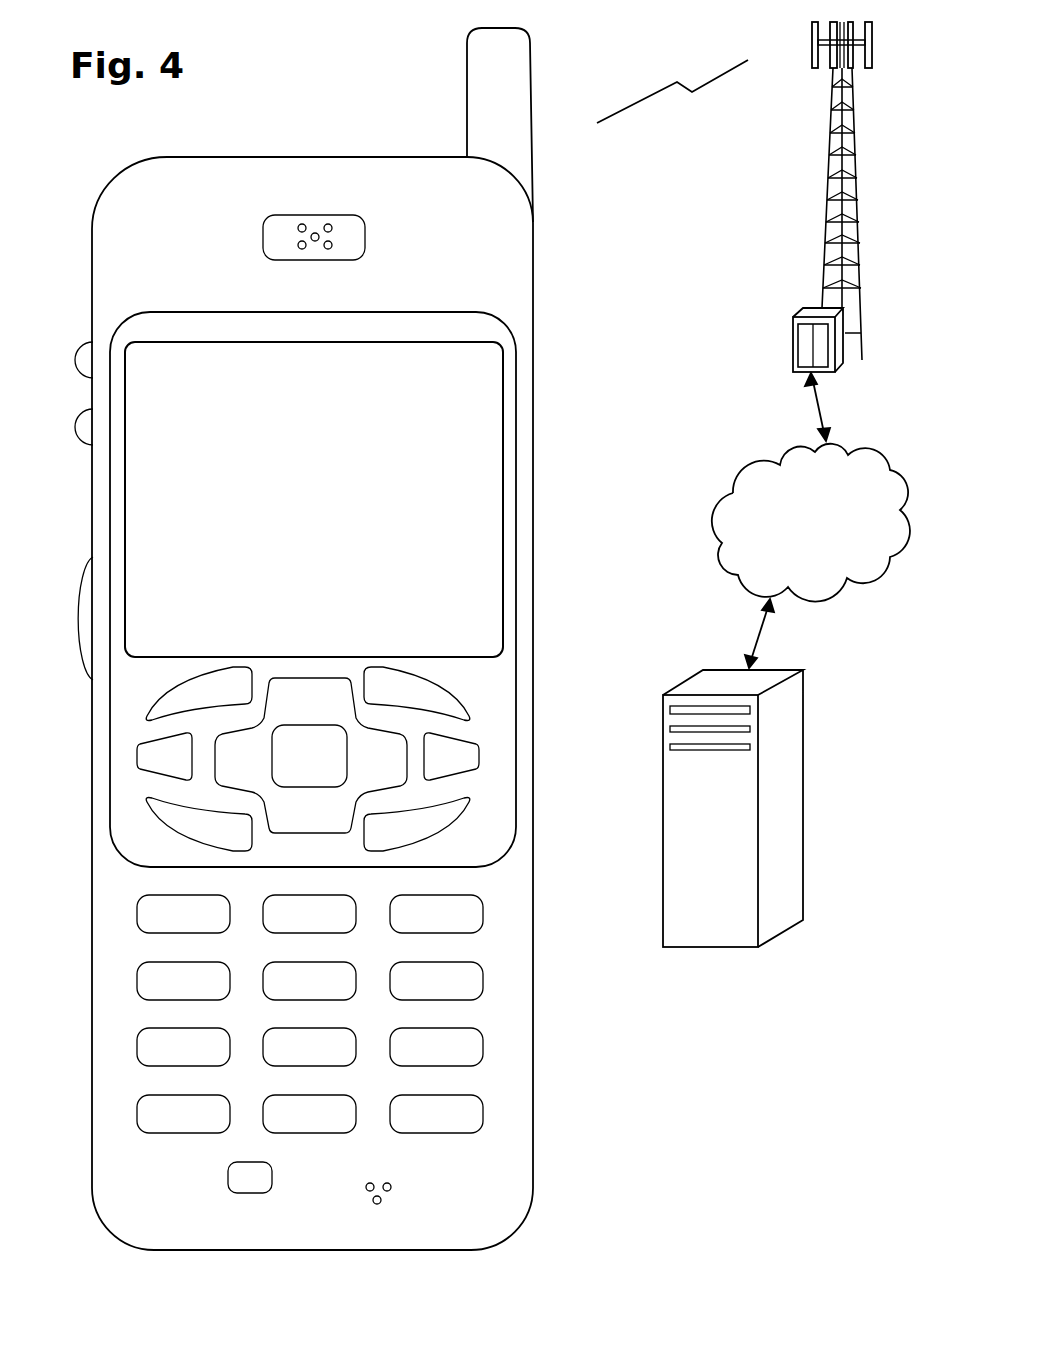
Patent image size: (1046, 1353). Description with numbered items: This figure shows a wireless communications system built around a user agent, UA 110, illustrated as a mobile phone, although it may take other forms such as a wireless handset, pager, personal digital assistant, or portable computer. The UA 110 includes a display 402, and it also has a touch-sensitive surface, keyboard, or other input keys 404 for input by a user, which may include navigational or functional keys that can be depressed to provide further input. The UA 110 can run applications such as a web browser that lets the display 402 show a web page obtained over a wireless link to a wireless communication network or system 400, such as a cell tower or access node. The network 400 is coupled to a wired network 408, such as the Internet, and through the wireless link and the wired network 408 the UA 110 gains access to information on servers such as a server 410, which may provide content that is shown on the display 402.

The user agent 110 is at (152, 1250).
The wireless communication network 400 is at (828, 212).
The display 402 is at (503, 357).
The input keys 404 is at (537, 663).
The wired network 408 is at (736, 580).
The server 410 is at (712, 947).